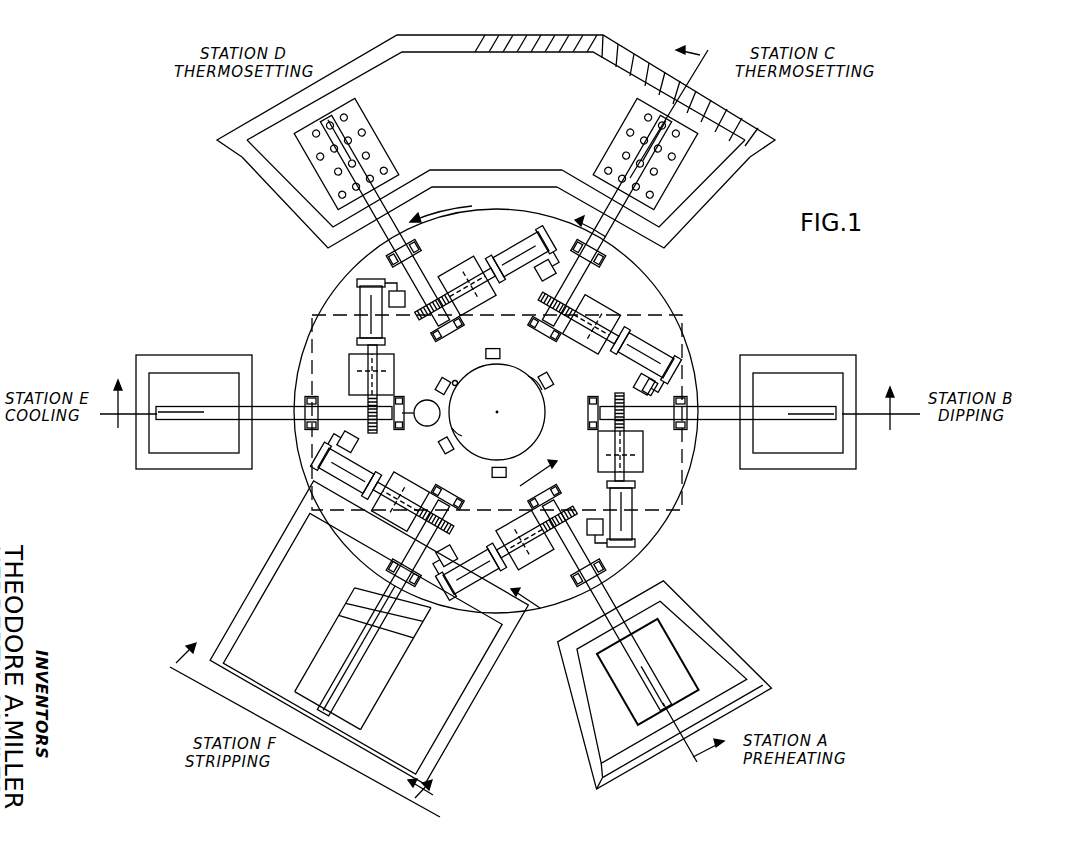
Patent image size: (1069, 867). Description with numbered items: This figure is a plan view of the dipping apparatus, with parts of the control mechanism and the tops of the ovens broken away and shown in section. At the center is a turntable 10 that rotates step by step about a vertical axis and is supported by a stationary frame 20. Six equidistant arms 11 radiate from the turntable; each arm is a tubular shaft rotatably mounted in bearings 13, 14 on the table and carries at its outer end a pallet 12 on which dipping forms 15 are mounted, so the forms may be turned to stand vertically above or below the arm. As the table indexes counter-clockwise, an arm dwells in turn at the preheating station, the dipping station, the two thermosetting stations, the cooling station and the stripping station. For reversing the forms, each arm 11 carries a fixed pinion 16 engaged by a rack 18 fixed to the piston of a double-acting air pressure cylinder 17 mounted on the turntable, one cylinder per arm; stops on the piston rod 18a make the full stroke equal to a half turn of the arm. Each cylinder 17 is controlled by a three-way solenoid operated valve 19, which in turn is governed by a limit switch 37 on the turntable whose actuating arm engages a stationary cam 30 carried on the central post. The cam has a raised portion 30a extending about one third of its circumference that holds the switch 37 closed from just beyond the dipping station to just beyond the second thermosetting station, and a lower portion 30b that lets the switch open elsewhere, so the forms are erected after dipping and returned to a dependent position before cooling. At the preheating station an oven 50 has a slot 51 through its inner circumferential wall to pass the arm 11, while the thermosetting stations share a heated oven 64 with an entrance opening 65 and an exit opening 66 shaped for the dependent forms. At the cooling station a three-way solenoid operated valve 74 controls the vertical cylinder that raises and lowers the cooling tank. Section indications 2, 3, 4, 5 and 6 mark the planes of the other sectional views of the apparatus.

The section line 2- 2 is at (502, 418).
The section line 3- 3 is at (614, 616).
The section line 4- 4 is at (485, 699).
The section line 5- 5 is at (300, 732).
The section line 6- 6 is at (622, 246).
The turntable 10 is at (660, 278).
The arm 11 is at (343, 682).
The pallet 12 is at (672, 630).
The bearing 13 is at (580, 578).
The bearing 14 is at (590, 464).
The dipping form 15 is at (692, 148).
The pinion 16 is at (570, 490).
The double-acting air pressure cylinder 17 is at (402, 462).
The rack 18 is at (548, 566).
The piston rod 18a is at (335, 452).
The three-way solenoid operated valve 19 is at (582, 562).
The stationary frame 20 is at (683, 318).
The stationary cam 30 is at (530, 404).
The raised portion 30a is at (540, 384).
The lower portion 30b is at (455, 432).
The limit switch 37 is at (448, 376).
The oven 50 is at (760, 676).
The slot 51 is at (740, 650).
The heated oven 64 is at (385, 50).
The entrance opening 65 is at (740, 176).
The exit opening 66 is at (256, 173).
The three-way solenoid operated valve 74 is at (421, 413).